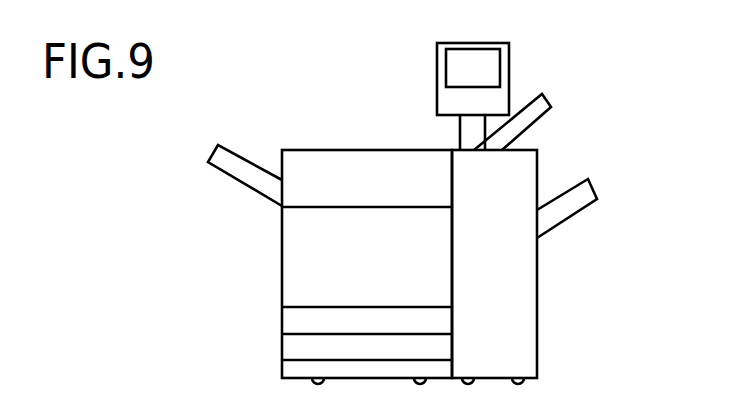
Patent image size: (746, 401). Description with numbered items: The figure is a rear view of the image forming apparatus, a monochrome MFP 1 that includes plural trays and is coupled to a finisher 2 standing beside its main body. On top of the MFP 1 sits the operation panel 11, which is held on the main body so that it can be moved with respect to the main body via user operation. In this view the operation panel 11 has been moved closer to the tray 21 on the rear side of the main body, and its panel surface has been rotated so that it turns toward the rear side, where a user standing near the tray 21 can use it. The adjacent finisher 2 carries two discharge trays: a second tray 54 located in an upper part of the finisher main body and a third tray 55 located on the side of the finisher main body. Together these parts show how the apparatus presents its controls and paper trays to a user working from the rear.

The MFP 1 is at (277, 275).
The finisher 2 is at (541, 311).
The operation panel 11 is at (509, 57).
The tray 21 is at (210, 155).
The tray (second tray) 54 is at (547, 102).
The tray (third tray) 55 is at (596, 194).